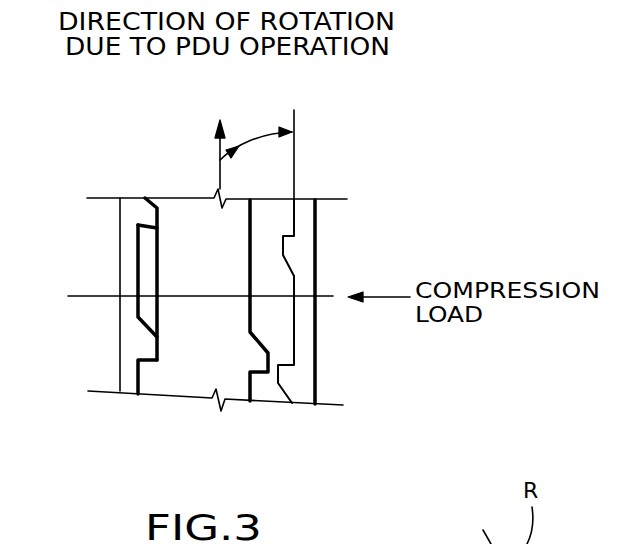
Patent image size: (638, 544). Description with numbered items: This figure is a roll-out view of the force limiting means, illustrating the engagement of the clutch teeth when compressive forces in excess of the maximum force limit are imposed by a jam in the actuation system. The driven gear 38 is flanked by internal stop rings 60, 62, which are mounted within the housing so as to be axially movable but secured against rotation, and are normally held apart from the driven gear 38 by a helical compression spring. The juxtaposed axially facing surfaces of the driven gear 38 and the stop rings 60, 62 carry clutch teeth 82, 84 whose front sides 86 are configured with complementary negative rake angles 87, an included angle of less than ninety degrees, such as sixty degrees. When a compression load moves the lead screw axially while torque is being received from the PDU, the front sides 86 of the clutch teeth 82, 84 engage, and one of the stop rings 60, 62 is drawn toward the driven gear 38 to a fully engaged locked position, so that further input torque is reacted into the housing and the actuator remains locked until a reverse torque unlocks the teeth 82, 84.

The driven gear 38 is at (212, 405).
The internal stop ring 60 is at (302, 390).
The internal stop ring 62 is at (127, 376).
The clutch teeth 82 is at (140, 372).
The clutch teeth 84 is at (147, 342).
The front side 86 is at (282, 232).
The negative rake angle 87 is at (260, 133).